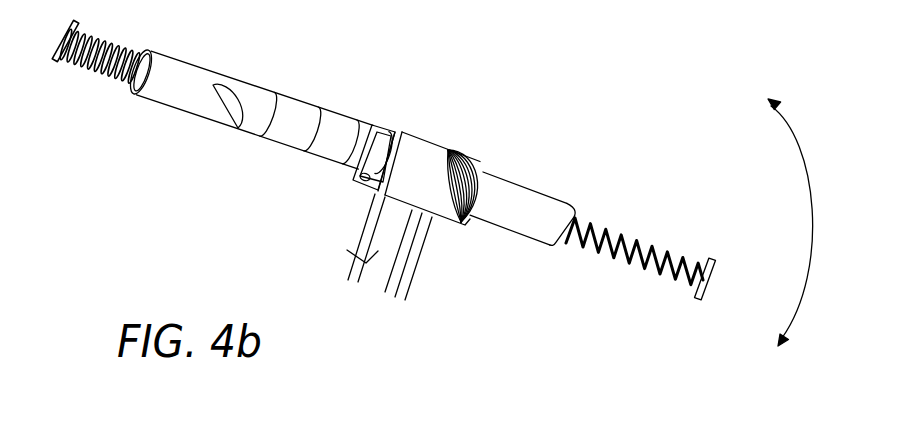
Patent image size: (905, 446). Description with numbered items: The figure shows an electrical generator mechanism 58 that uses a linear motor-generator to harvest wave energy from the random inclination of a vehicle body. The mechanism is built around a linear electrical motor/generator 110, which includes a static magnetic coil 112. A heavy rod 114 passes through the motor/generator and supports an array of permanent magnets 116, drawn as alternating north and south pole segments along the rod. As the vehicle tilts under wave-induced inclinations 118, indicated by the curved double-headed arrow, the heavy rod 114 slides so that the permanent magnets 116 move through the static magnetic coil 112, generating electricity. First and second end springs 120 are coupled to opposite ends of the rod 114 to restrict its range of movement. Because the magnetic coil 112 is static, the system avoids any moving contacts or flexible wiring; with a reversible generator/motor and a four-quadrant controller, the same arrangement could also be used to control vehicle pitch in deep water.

The electrical generator mechanism 58 is at (162, 178).
The linear electrical motor/generator 110 is at (418, 137).
The static magnetic coil 112 is at (473, 155).
The heavy rod 114 is at (528, 247).
The array of permanent magnets 116 is at (242, 71).
The wave-induced inclinations 118 is at (807, 196).
The first and second end springs 120 is at (108, 74).